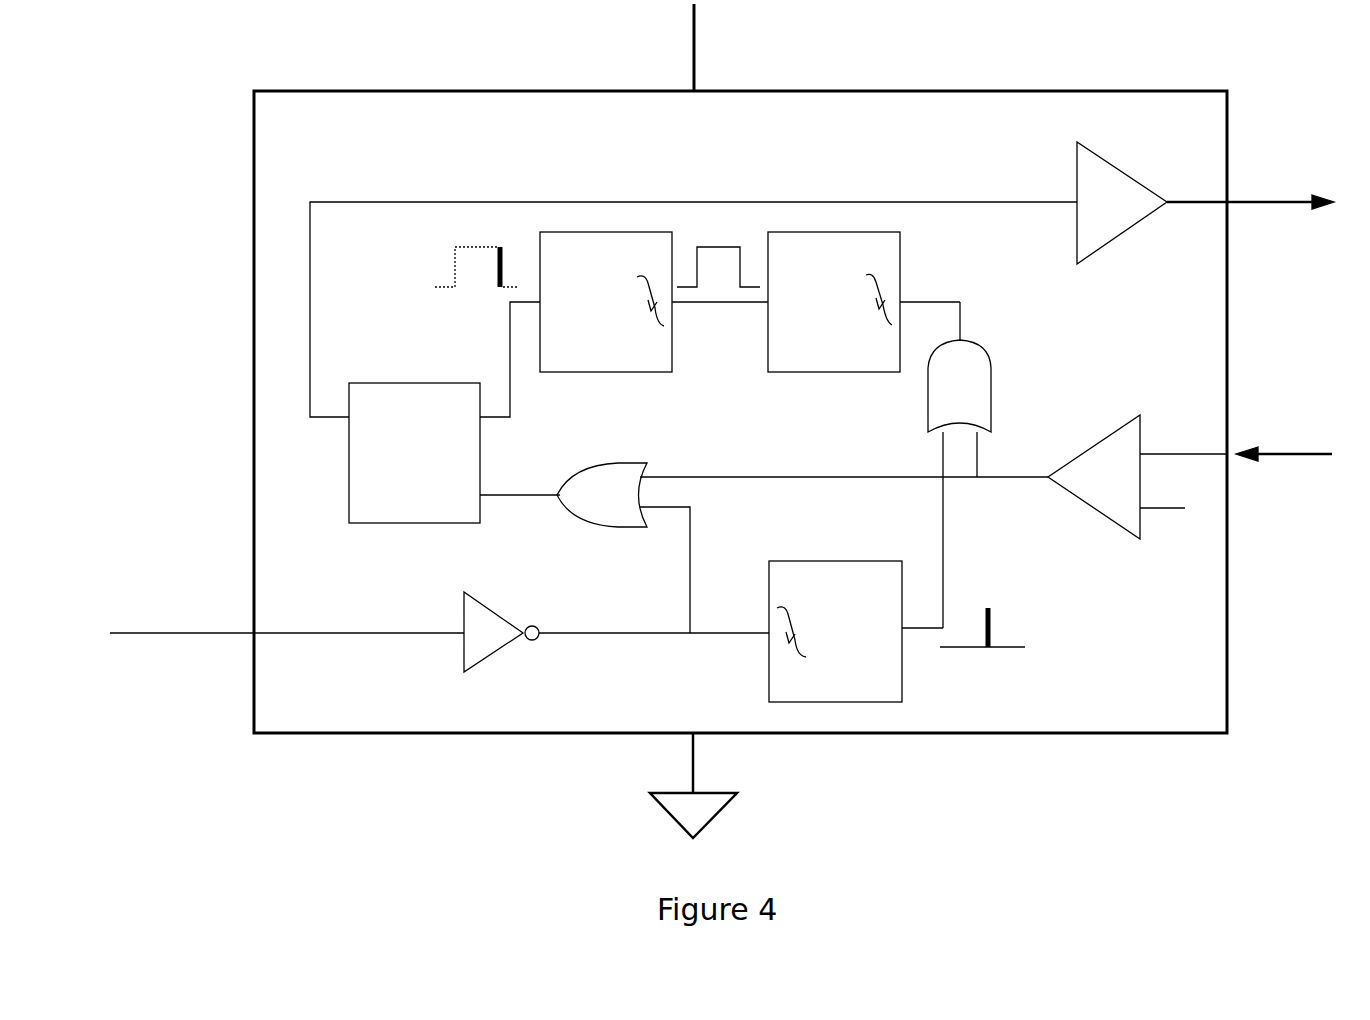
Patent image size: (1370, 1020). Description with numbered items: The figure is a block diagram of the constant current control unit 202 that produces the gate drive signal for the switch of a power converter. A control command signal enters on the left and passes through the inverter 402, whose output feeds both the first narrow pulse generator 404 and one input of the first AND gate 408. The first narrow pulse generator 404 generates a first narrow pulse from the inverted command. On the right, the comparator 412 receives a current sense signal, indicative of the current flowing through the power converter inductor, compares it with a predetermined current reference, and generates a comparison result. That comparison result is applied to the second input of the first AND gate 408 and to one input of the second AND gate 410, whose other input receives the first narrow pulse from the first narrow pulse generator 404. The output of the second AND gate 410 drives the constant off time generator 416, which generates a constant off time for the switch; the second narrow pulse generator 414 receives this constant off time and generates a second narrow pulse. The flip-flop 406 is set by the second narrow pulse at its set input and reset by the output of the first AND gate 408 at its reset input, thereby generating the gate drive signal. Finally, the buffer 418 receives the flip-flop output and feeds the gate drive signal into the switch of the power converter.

The constant current control unit 202 is at (718, 421).
The inverter 402 is at (616, 632).
The first narrow pulse generator 404 is at (897, 567).
The flip-flop 406 is at (693, 362).
The first AND gate 408 is at (802, 548).
The second AND gate 410 is at (959, 389).
The comparator 412 is at (1094, 477).
The second narrow pulse generator 414 is at (601, 302).
The constant off time generator 416 is at (864, 302).
The buffer 418 is at (1122, 203).